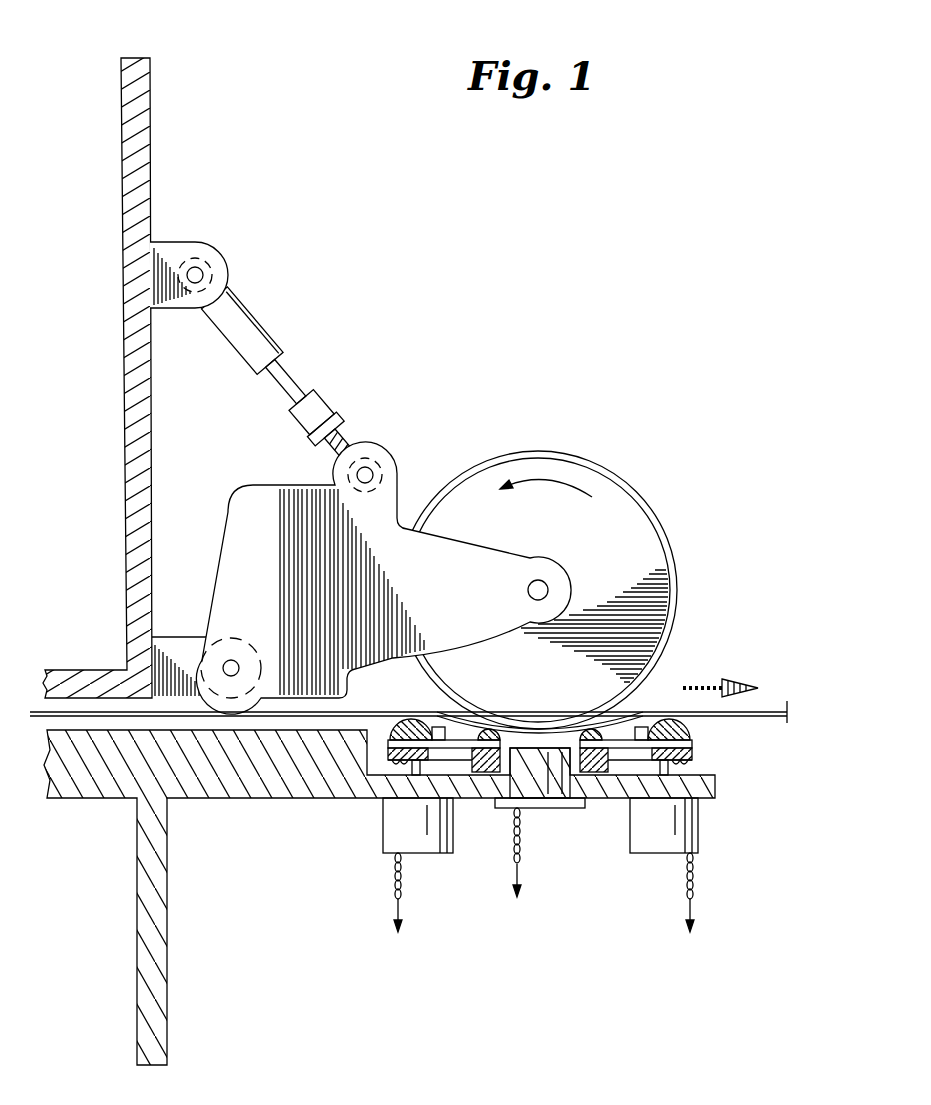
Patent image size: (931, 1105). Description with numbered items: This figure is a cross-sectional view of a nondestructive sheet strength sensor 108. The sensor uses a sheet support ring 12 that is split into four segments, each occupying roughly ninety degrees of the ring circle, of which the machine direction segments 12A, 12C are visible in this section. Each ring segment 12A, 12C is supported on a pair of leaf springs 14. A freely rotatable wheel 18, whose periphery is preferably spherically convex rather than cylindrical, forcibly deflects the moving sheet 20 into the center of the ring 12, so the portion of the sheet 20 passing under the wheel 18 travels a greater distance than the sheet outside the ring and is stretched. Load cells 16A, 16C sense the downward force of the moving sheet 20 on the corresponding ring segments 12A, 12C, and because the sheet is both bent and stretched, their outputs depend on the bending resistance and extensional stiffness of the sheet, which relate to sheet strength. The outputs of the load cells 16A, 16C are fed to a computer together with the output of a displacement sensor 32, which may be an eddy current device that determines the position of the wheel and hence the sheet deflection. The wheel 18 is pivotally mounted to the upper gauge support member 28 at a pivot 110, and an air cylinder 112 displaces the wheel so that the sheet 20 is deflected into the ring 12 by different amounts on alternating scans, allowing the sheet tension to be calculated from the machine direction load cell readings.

The sheet strength sensor 108 is at (592, 355).
The air cylinder 112 is at (258, 317).
The upper gauge support member 28 is at (125, 452).
The freely rotatable wheel 18 is at (620, 497).
The pivot 110 is at (237, 657).
The moving sheet 20 is at (773, 706).
The sheet support ring 12 is at (564, 698).
The ring segment 12A is at (665, 719).
The ring segment 12C is at (411, 719).
The leaf springs 14 is at (462, 772).
The displacement sensor 32 is at (538, 798).
The load cell 16C is at (392, 843).
The load cell 16A is at (698, 823).